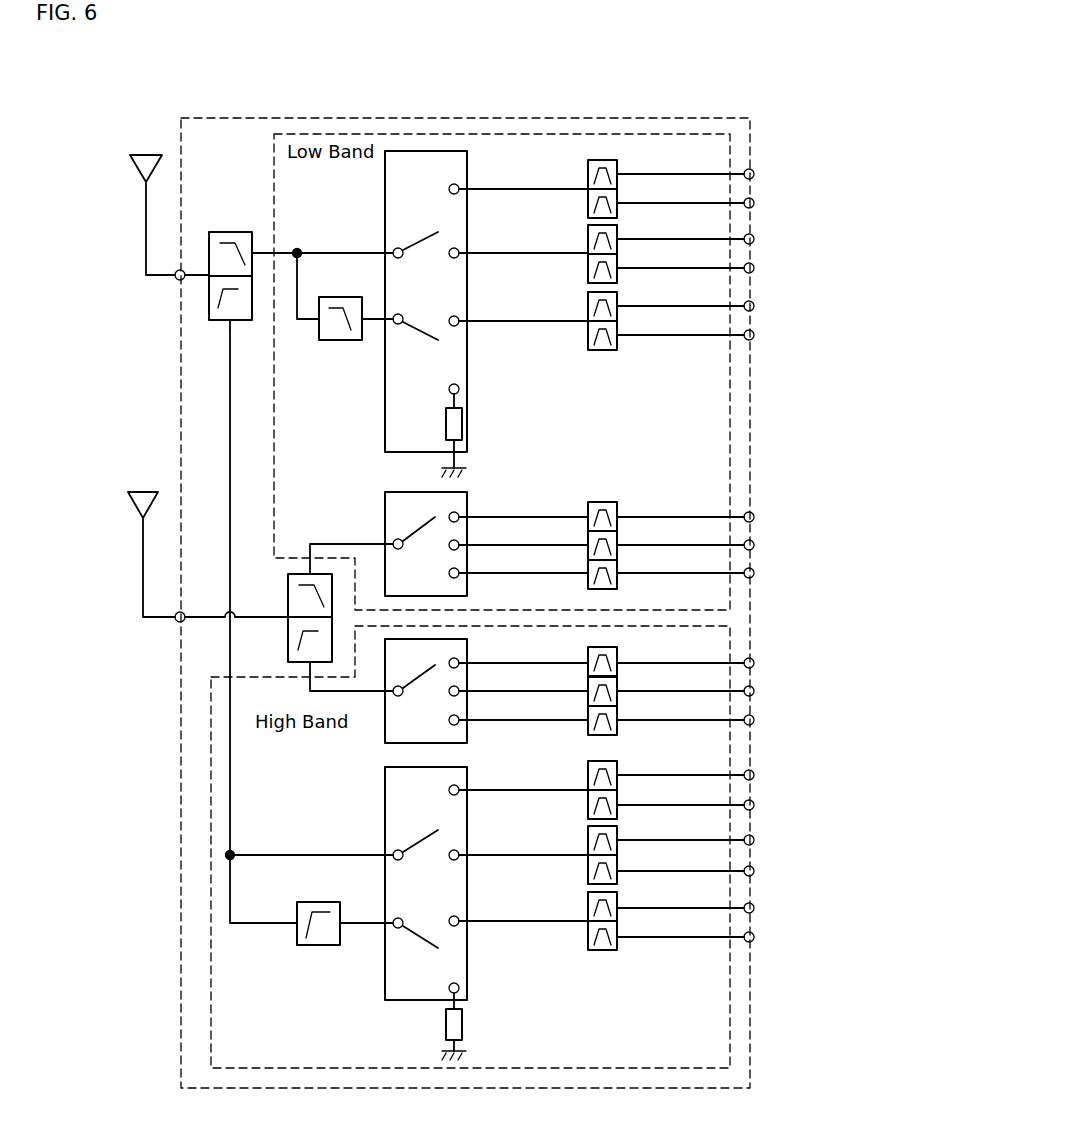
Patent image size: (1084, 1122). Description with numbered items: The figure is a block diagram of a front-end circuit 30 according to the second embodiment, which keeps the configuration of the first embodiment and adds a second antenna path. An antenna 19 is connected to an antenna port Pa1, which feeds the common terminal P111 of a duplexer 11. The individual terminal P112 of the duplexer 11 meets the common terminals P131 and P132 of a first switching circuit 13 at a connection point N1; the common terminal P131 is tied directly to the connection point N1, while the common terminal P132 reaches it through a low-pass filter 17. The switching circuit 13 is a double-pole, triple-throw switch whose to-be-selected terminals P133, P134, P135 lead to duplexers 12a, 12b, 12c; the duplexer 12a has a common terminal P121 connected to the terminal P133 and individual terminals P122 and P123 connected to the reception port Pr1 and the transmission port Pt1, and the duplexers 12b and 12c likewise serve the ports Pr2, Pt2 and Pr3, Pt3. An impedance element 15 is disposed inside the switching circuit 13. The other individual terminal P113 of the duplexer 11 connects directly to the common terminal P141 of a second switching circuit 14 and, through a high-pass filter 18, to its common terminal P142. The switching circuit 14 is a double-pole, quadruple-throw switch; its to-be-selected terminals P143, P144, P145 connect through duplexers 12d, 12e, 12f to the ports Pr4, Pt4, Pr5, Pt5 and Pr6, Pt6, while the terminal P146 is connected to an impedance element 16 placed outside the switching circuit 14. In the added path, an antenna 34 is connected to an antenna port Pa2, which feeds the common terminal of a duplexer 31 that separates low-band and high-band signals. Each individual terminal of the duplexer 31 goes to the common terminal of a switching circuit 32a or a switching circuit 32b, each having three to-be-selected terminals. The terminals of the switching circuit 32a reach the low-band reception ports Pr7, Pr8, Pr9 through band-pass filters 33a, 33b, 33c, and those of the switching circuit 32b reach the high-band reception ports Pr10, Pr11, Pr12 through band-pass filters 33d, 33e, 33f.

The front-end circuit 30 is at (582, 117).
The antenna 19 is at (146, 154).
The antenna 34 is at (144, 490).
The duplexer 11 is at (231, 232).
The duplexer 31 is at (287, 590).
The low-pass filter 17 is at (322, 341).
The high-pass filter 18 is at (300, 946).
The switching circuit 13 is at (439, 150).
The switching circuit 14 is at (384, 796).
The impedance element 15 is at (463, 425).
The impedance element 16 is at (463, 1024).
The switching circuit 32a is at (468, 492).
The switching circuit 32b is at (468, 640).
The duplexer 12a is at (606, 160).
The duplexer 12b is at (618, 233).
The duplexer 12c is at (618, 298).
The duplexer 12d is at (618, 768).
The duplexer 12e is at (618, 838).
The duplexer 12f is at (618, 906).
The band-pass filter 33a is at (618, 506).
The band-pass filter 33b is at (618, 536).
The band-pass filter 33c is at (618, 566).
The band-pass filter 33d is at (618, 651).
The band-pass filter 33e is at (618, 682).
The band-pass filter 33f is at (618, 711).
The connection point N1 is at (296, 259).
The antenna port Pa1 is at (176, 279).
The antenna port Pa2 is at (178, 621).
The common terminal P111 is at (208, 280).
The individual terminal P112 is at (254, 247).
The individual terminal P113 is at (229, 322).
The common terminal P121 is at (586, 187).
The individual terminal P122 is at (620, 174).
The individual terminal P123 is at (620, 203).
The common terminal P131 is at (395, 249).
The common terminal P132 is at (396, 325).
The to-be-selected terminal P133 is at (458, 185).
The to-be-selected terminal P134 is at (458, 251).
The to-be-selected terminal P135 is at (458, 319).
The common terminal P141 is at (395, 851).
The common terminal P142 is at (396, 928).
The to-be-selected terminal P143 is at (458, 788).
The to-be-selected terminal P144 is at (458, 853).
The to-be-selected terminal P145 is at (458, 919).
The to-be-selected terminal P146 is at (458, 986).
The reception port Pr1 is at (767, 174).
The reception port Pr2 is at (767, 239).
The reception port Pr3 is at (767, 306).
The reception port Pr4 is at (767, 775).
The reception port Pr5 is at (767, 840).
The reception port Pr6 is at (767, 908).
The reception port Pr7 is at (767, 517).
The reception port Pr8 is at (767, 545).
The reception port Pr9 is at (767, 573).
The reception port Pr10 is at (773, 663).
The reception port Pr11 is at (773, 691).
The reception port Pr12 is at (773, 720).
The transmission port Pt1 is at (767, 203).
The transmission port Pt2 is at (767, 268).
The transmission port Pt3 is at (767, 335).
The transmission port Pt4 is at (767, 805).
The transmission port Pt5 is at (767, 871).
The transmission port Pt6 is at (767, 937).